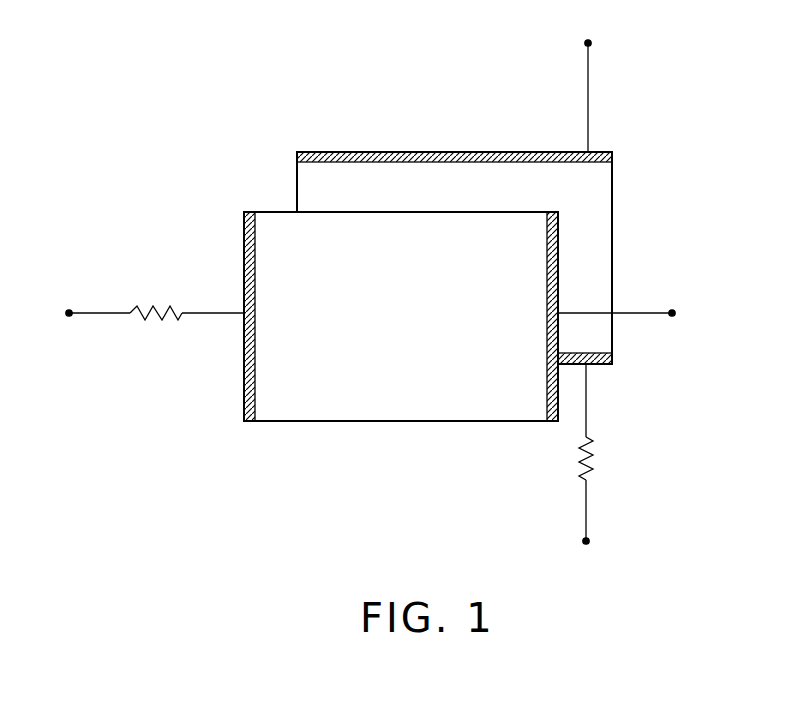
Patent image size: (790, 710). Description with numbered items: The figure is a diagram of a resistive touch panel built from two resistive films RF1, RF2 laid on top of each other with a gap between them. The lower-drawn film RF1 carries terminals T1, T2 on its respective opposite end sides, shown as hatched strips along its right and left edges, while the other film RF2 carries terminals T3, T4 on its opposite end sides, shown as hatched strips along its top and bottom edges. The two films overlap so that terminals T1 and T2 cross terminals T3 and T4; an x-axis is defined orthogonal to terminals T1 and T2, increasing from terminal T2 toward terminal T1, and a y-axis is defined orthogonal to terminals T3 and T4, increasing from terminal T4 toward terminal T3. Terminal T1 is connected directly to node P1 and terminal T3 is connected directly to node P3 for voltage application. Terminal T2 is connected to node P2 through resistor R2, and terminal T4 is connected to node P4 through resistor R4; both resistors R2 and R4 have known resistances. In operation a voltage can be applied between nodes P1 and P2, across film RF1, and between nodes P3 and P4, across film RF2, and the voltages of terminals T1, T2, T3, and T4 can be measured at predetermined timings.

The resistive film RF1 is at (385, 423).
The resistive film RF2 is at (613, 193).
The terminal T1 is at (555, 423).
The terminal T2 is at (244, 387).
The terminal T3 is at (328, 152).
The terminal T4 is at (606, 365).
The node P1 is at (623, 298).
The node P2 is at (94, 298).
The node P3 is at (591, 81).
The node P4 is at (589, 527).
The resistor R2 is at (150, 318).
The resistor R4 is at (590, 472).